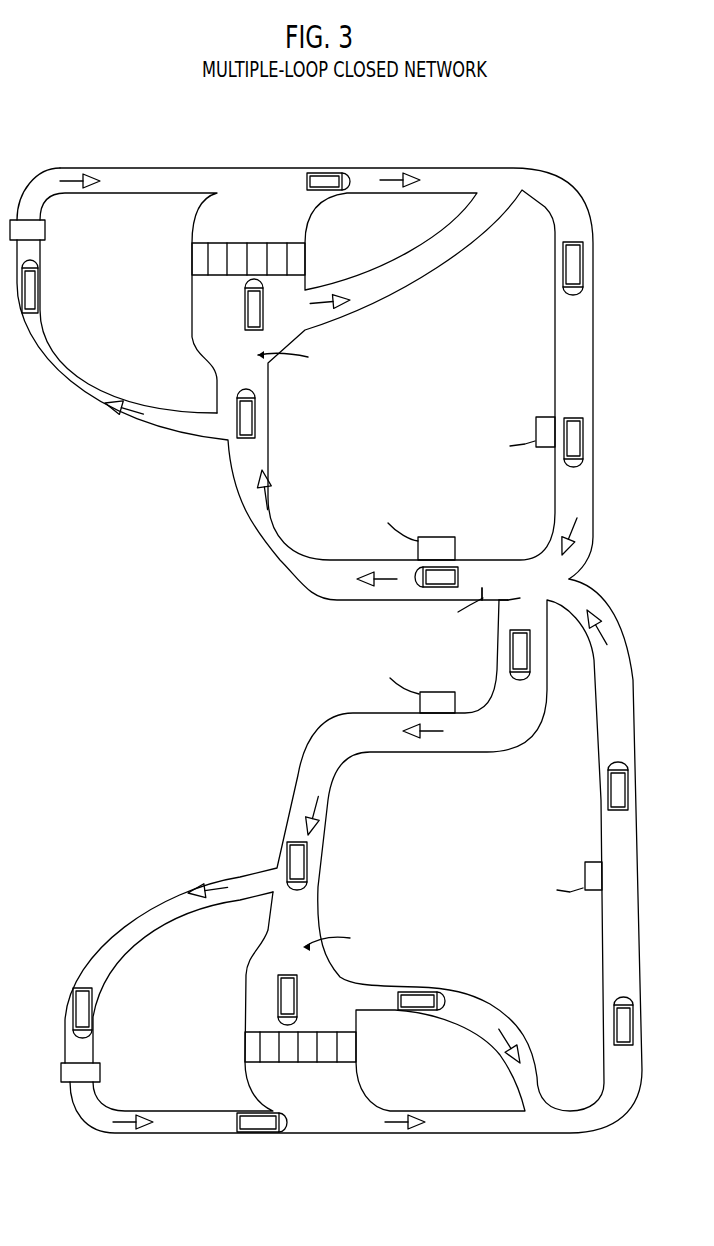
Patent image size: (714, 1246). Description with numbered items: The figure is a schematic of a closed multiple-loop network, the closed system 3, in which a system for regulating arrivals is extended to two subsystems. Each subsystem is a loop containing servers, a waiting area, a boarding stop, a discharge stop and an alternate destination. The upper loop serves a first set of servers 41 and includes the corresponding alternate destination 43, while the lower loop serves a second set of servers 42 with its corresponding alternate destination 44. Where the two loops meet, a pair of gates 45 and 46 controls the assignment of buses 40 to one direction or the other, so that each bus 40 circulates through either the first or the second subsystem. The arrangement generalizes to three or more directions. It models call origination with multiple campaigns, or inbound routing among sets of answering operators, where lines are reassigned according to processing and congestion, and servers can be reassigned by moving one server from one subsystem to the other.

The closed system 3 is at (567, 134).
The bus 40 is at (245, 438).
The servers 41 is at (340, 247).
The servers 42 is at (363, 1046).
The alternate destination 43 is at (67, 251).
The alternate destination 44 is at (116, 1061).
The gate 45 is at (476, 589).
The gate 46 is at (515, 608).